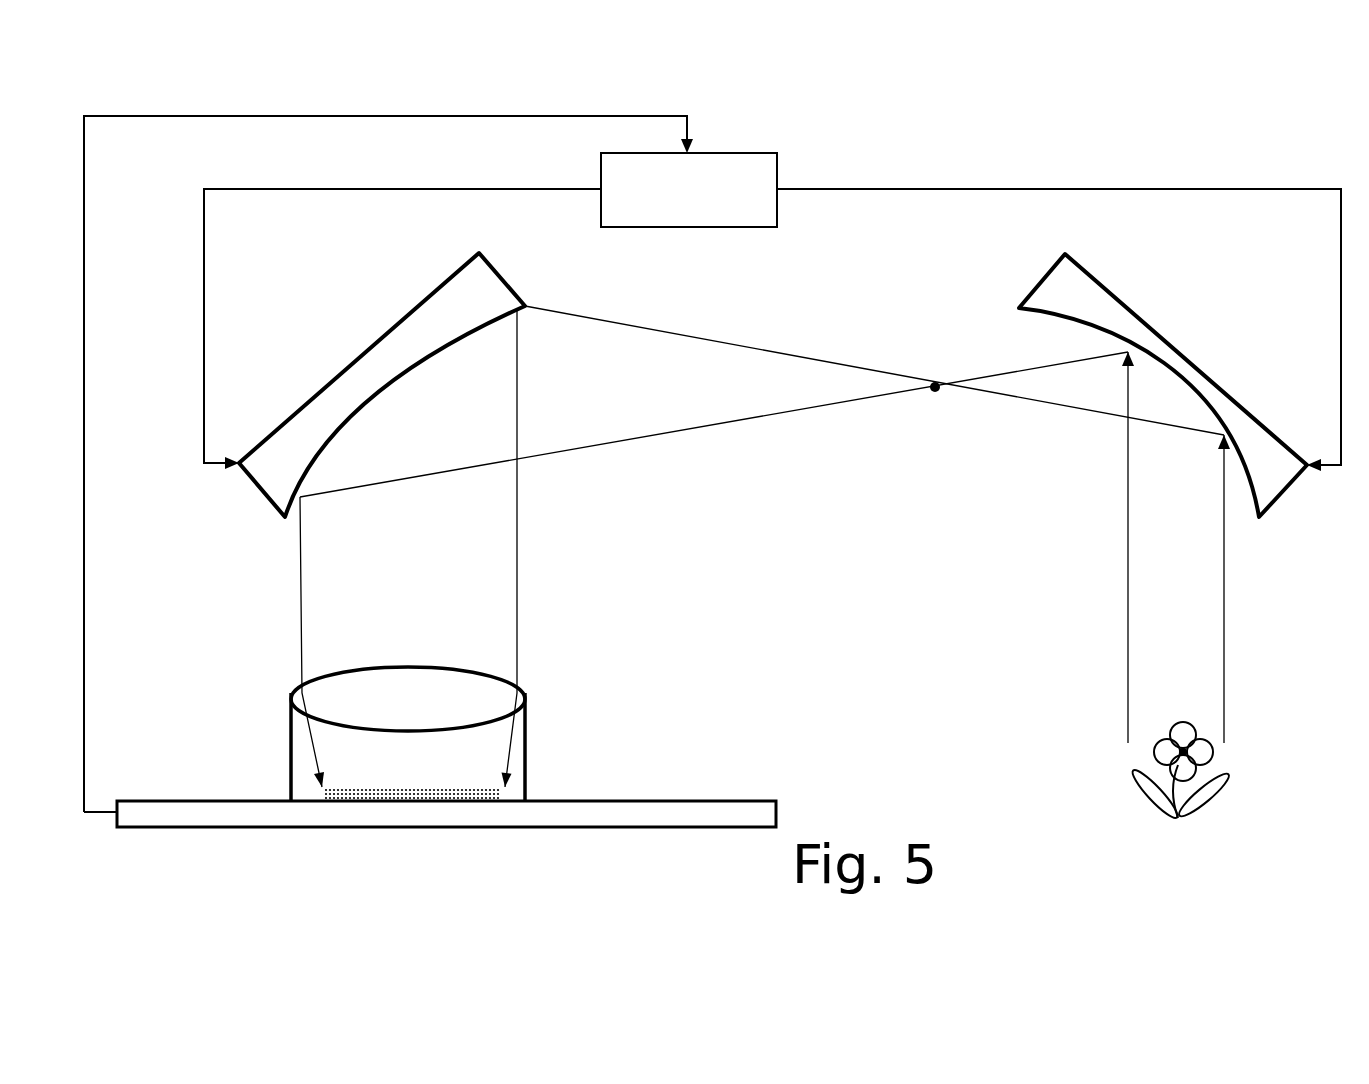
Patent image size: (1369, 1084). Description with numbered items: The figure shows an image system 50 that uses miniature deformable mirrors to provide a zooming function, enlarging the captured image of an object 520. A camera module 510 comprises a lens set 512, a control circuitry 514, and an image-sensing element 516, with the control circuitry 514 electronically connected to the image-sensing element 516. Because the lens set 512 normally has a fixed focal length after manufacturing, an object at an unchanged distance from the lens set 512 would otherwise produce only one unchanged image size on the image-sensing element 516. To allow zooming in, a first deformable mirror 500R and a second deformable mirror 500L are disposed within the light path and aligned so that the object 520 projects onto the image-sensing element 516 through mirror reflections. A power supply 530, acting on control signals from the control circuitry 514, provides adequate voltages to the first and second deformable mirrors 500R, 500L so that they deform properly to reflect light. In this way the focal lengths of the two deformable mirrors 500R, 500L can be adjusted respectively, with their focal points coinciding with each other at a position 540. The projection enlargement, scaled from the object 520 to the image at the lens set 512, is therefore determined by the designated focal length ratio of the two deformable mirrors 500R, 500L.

The image system 50 is at (890, 138).
The second deformable mirror 500L is at (448, 310).
The first deformable mirror 500R is at (1083, 285).
The camera module 510 is at (275, 680).
The lens set 512 is at (412, 690).
The control circuitry 514 is at (635, 815).
The image-sensing element 516 is at (438, 790).
The object 520 is at (1132, 772).
The power supply 530 is at (752, 212).
The position 540 is at (935, 387).